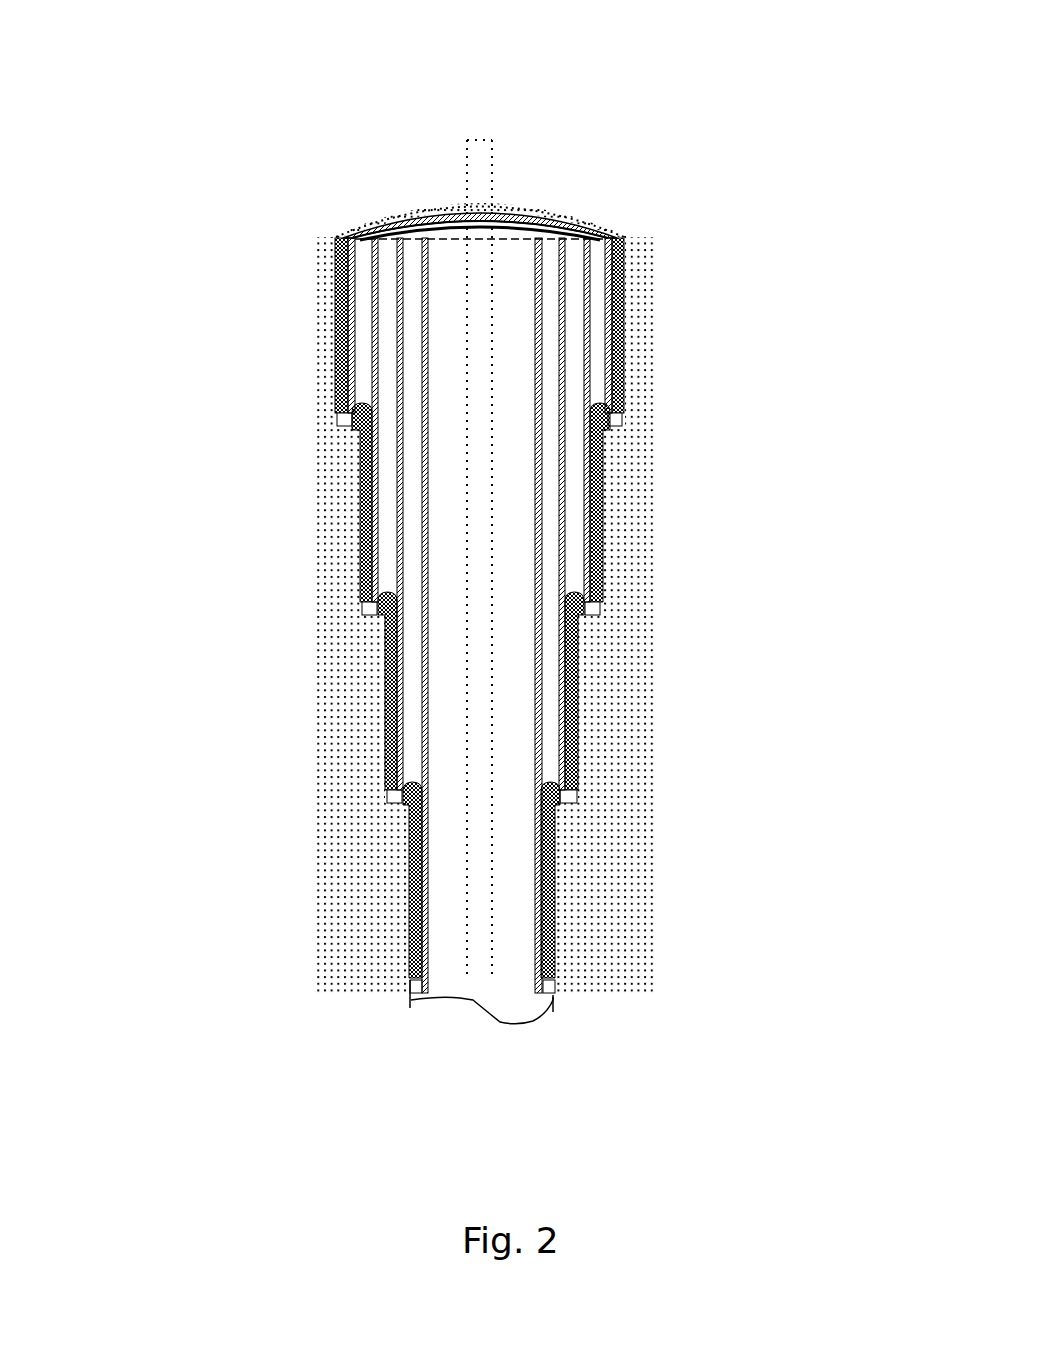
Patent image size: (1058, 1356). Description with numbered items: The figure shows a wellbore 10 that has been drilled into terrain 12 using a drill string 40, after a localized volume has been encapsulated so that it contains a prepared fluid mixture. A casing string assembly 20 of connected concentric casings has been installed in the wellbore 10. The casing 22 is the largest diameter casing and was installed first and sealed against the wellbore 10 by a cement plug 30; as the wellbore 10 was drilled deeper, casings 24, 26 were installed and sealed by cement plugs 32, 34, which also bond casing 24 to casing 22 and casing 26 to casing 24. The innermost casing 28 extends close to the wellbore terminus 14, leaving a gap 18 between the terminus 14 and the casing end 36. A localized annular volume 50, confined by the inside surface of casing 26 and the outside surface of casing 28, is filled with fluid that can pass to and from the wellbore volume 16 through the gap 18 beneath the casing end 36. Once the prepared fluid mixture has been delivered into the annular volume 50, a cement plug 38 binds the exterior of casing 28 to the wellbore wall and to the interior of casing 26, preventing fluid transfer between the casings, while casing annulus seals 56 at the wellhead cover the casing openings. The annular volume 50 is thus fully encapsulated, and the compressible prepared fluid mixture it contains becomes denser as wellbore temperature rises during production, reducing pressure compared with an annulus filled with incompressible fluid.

The wellbore 10 is at (380, 98).
The terrain 12 is at (620, 840).
The wellbore terminus 14 is at (496, 1038).
The wellbore volume 16 is at (451, 925).
The gap 18 is at (552, 1003).
The casing string assembly 20 is at (573, 210).
The casing 22 is at (337, 253).
The casing 24 is at (377, 393).
The casing 26 is at (403, 517).
The casing 28 is at (427, 765).
The cement plug 30 is at (337, 315).
The cement plug 32 is at (375, 465).
The cement plug 34 is at (390, 640).
The casing end 36 is at (557, 993).
The cement plug 38 is at (409, 954).
The drill string 40 is at (488, 130).
The annular volume 50 is at (411, 575).
The casing annulus seals 56 is at (548, 228).